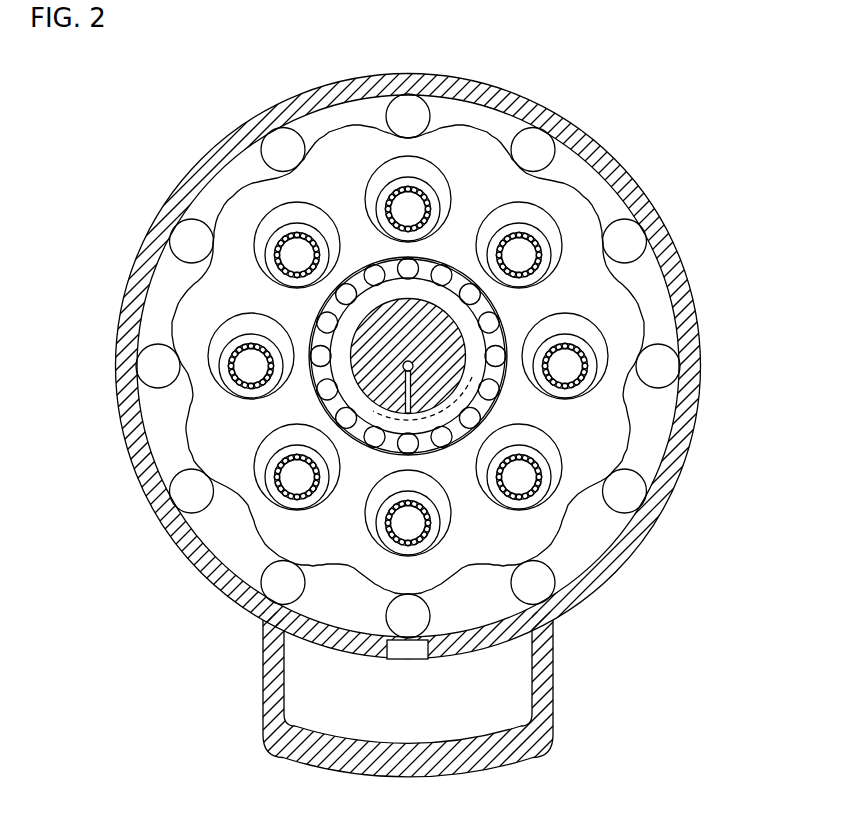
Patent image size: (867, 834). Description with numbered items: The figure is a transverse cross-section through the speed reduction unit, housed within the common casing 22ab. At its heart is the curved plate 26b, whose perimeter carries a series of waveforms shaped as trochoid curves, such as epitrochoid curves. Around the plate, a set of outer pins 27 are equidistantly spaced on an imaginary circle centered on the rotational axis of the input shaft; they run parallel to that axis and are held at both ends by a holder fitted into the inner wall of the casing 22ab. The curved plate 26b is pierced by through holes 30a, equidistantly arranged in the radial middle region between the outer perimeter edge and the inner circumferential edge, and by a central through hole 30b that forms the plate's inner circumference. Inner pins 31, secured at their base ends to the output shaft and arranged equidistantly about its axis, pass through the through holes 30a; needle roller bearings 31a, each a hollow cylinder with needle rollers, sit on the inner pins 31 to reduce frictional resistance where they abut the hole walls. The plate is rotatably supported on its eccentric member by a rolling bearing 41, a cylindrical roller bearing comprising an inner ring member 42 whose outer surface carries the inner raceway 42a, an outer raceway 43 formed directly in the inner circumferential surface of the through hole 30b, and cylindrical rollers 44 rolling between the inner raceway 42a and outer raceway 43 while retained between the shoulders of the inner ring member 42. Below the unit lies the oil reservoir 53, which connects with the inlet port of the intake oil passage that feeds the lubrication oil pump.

The common casing 22ab is at (664, 222).
The curved plate 26b is at (535, 520).
The outer pins 27 is at (655, 368).
The through holes 30a is at (280, 222).
The through hole 30b is at (322, 333).
The inner pins 31 is at (236, 343).
The needle roller bearings 31a is at (252, 365).
The rolling bearing 41 is at (322, 392).
The inner ring member 42 is at (336, 374).
The inner raceway 42a is at (458, 403).
The outer raceway 43 is at (382, 270).
The cylindrical rollers 44 is at (333, 399).
The oil reservoir 53 is at (332, 704).